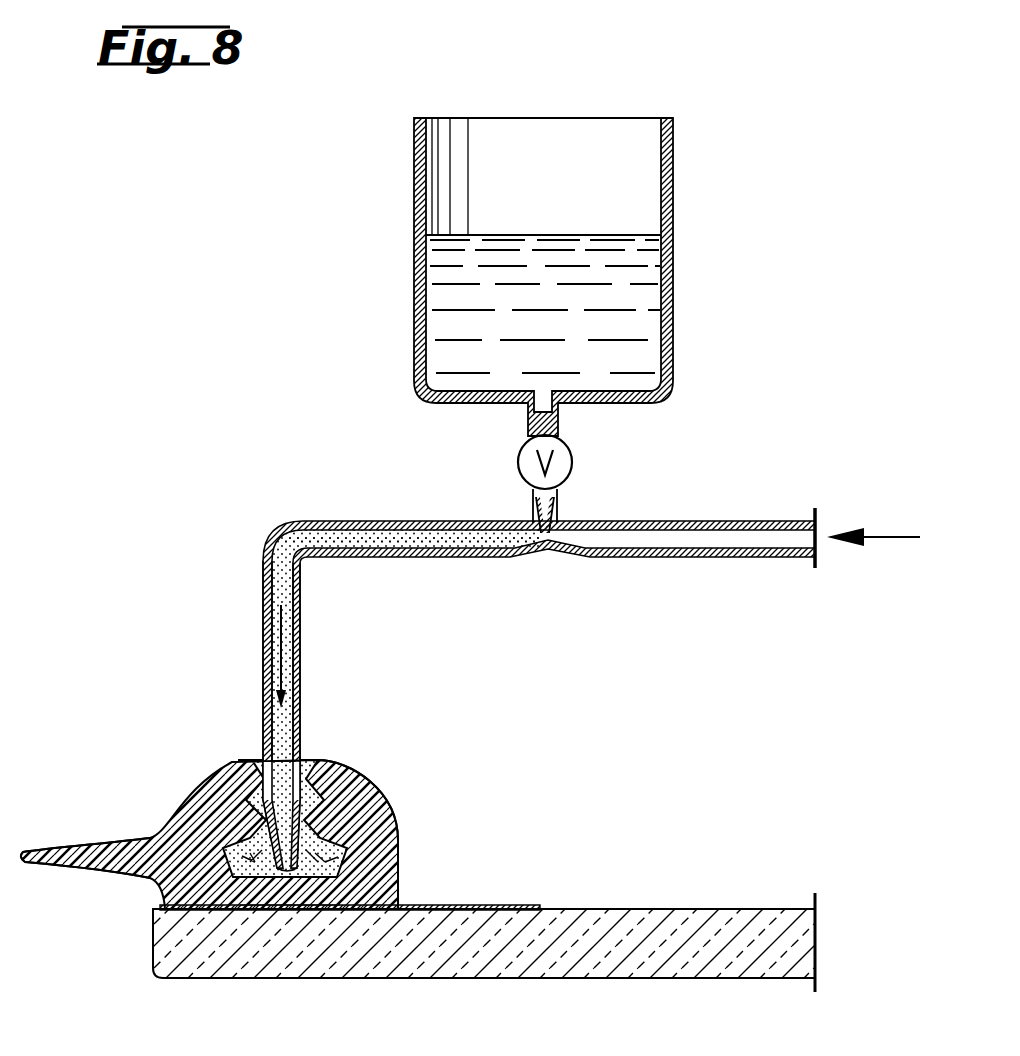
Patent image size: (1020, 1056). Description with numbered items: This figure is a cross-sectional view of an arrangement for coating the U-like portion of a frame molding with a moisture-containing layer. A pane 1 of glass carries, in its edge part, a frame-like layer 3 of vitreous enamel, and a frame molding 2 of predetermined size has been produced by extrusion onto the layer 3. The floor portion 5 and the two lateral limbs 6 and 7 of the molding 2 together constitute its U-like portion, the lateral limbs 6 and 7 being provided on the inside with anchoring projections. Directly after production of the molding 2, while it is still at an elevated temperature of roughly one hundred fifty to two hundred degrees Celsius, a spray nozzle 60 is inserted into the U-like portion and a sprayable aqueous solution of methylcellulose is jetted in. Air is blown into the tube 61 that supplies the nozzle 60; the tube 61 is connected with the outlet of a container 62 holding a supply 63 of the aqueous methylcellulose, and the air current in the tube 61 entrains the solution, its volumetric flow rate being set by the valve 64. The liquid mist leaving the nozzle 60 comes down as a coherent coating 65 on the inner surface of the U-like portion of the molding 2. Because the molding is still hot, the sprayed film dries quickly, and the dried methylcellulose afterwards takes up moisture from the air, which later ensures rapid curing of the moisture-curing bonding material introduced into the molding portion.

The pane 1 is at (628, 962).
The frame molding 2 is at (242, 811).
The frame-like layer 3 is at (512, 908).
The floor portion 5 is at (306, 912).
The lateral limb 6 is at (210, 812).
The lateral limb 7 is at (375, 805).
The spray nozzle 60 is at (303, 780).
The tube 61 is at (722, 540).
The container 62 is at (672, 265).
The supply 63 is at (640, 327).
The valve 64 is at (527, 468).
The coating 65 is at (240, 772).